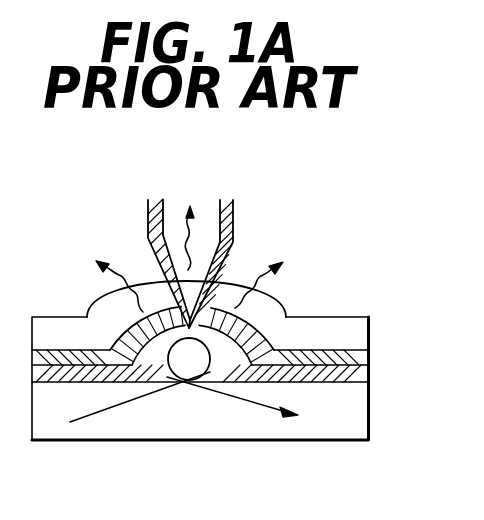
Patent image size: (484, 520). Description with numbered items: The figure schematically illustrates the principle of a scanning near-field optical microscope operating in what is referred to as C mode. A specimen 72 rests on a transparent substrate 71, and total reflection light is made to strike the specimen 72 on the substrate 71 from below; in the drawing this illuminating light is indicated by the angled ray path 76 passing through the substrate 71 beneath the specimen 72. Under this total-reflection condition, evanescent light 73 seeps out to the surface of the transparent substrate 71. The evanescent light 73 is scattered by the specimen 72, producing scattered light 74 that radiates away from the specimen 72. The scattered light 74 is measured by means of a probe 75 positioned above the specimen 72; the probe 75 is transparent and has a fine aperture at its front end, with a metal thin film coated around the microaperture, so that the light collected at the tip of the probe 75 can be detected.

The transparent substrate 71 is at (358, 408).
The specimen 72 is at (218, 382).
The evanescent light 73 is at (380, 382).
The scattered light 74 is at (283, 265).
The probe 75 is at (233, 226).
The light path 76 is at (112, 410).